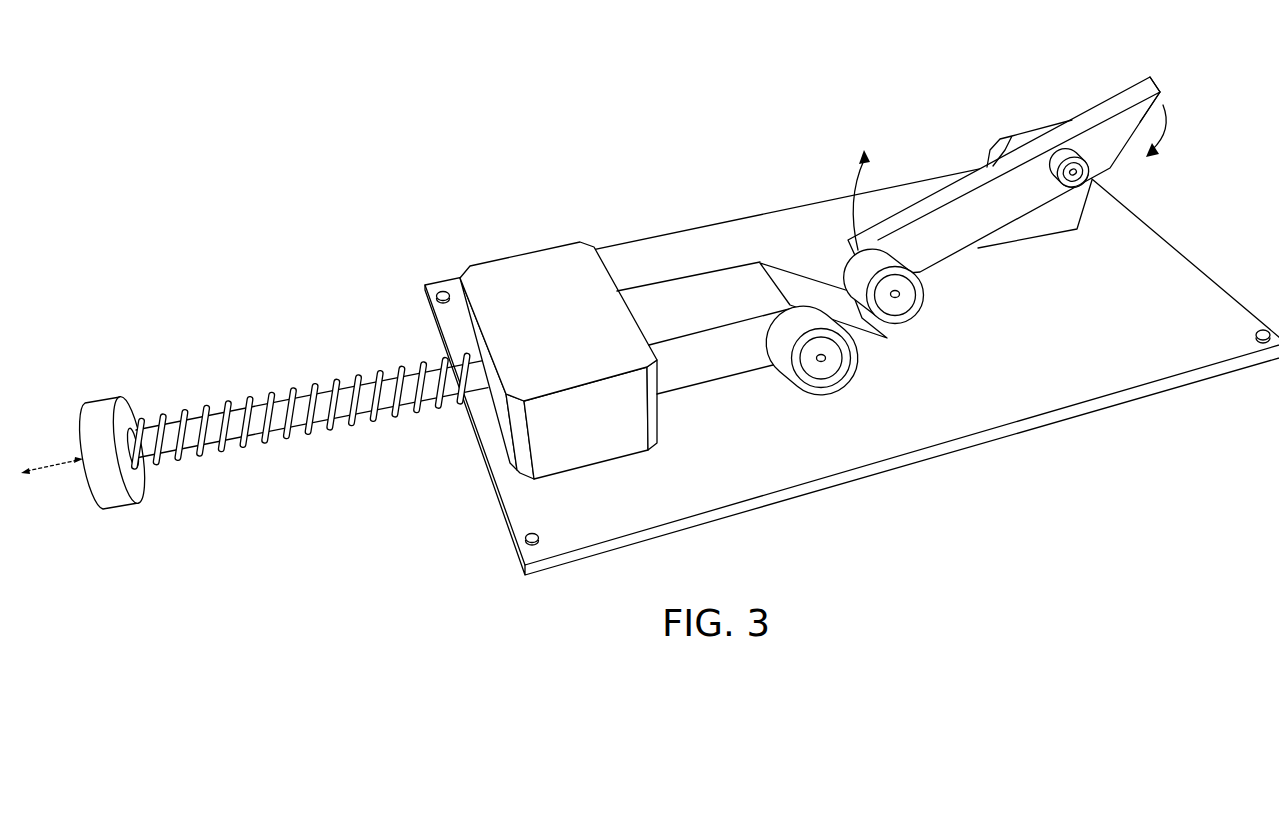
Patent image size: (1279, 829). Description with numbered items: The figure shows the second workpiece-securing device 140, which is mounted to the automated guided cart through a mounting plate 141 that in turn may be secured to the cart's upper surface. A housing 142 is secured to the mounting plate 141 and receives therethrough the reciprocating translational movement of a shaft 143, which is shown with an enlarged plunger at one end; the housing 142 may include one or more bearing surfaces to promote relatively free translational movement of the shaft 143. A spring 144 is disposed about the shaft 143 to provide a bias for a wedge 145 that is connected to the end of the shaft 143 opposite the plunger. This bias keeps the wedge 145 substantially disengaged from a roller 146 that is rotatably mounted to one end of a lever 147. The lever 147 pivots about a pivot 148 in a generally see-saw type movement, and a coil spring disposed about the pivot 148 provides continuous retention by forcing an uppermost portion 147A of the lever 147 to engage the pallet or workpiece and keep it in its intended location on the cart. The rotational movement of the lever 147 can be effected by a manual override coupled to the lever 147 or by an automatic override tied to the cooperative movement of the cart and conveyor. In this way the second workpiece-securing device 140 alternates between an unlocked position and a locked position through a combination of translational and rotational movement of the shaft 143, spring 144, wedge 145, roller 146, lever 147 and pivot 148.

The second workpiece-securing device 140 is at (572, 154).
The mounting plate 141 is at (781, 433).
The housing 142 is at (522, 276).
The shaft 143 is at (104, 394).
The spring 144 is at (293, 392).
The wedge 145 is at (722, 296).
The roller 146 is at (924, 289).
The lever 147 is at (963, 212).
The uppermost portion of the lever 147A is at (1167, 62).
The pivot 148 is at (1071, 157).